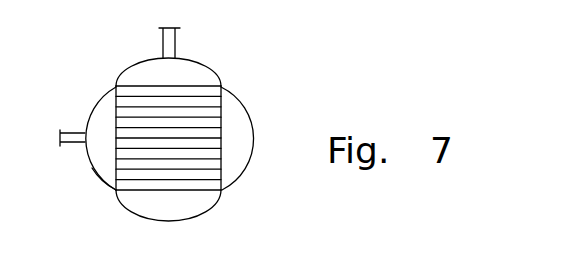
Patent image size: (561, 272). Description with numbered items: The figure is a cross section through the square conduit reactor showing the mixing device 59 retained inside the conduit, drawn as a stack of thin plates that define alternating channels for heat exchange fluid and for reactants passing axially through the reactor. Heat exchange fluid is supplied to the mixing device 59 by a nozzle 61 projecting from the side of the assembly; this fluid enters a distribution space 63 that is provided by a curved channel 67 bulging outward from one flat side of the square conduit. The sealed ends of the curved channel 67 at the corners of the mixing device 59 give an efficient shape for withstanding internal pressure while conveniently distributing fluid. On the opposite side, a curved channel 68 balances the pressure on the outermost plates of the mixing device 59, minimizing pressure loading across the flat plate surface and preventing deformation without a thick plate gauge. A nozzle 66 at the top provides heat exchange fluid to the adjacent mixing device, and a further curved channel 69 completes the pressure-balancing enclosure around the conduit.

The mixing device 59 is at (203, 122).
The nozzle 61 is at (70, 129).
The distribution space 63 is at (98, 155).
The nozzle 66 is at (176, 43).
The curved channel 67 is at (98, 92).
The curved channel 68 is at (197, 85).
The right shell bulge 69 is at (216, 72).